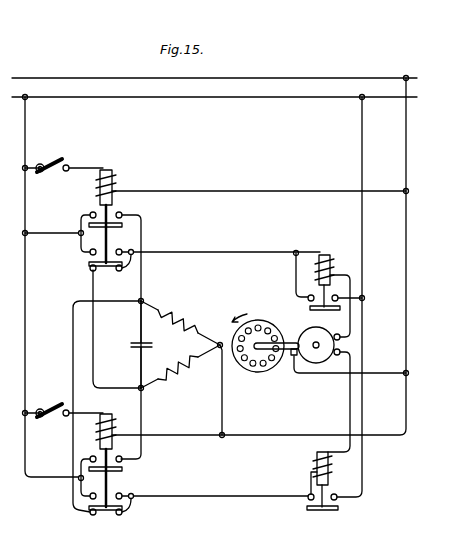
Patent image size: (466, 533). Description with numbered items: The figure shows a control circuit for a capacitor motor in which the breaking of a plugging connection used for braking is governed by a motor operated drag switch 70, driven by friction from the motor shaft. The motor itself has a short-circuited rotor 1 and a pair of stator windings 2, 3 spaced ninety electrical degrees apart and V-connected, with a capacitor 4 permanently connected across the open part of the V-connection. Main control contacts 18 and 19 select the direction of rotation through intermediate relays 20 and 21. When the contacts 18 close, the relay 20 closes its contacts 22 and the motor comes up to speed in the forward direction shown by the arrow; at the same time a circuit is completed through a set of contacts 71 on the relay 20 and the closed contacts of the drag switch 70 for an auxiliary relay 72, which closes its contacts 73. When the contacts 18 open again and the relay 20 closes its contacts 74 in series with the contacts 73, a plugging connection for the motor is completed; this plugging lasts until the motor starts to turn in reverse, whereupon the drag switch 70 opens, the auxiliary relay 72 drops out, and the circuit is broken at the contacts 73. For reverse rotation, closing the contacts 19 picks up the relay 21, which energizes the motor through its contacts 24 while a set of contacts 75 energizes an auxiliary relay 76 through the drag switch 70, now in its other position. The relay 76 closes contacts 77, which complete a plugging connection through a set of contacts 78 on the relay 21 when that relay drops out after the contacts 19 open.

The rotor 1 is at (265, 325).
The stator winding 2 is at (175, 374).
The stator winding 3 is at (183, 316).
The capacitor 4 is at (153, 344).
The main control contacts 18 is at (54, 163).
The main control contacts 19 is at (53, 408).
The intermediate relay 20 is at (107, 169).
The intermediate relay 21 is at (106, 413).
The contacts 22 is at (108, 216).
The contacts 24 is at (108, 460).
The drag switch 70 is at (327, 334).
The contacts 71 is at (104, 251).
The auxiliary relay 72 is at (325, 254).
The contacts 73 is at (309, 295).
The contacts 74 is at (100, 271).
The contacts 75 is at (104, 495).
The auxiliary relay 76 is at (313, 459).
The contacts 77 is at (337, 493).
The contacts 78 is at (99, 515).